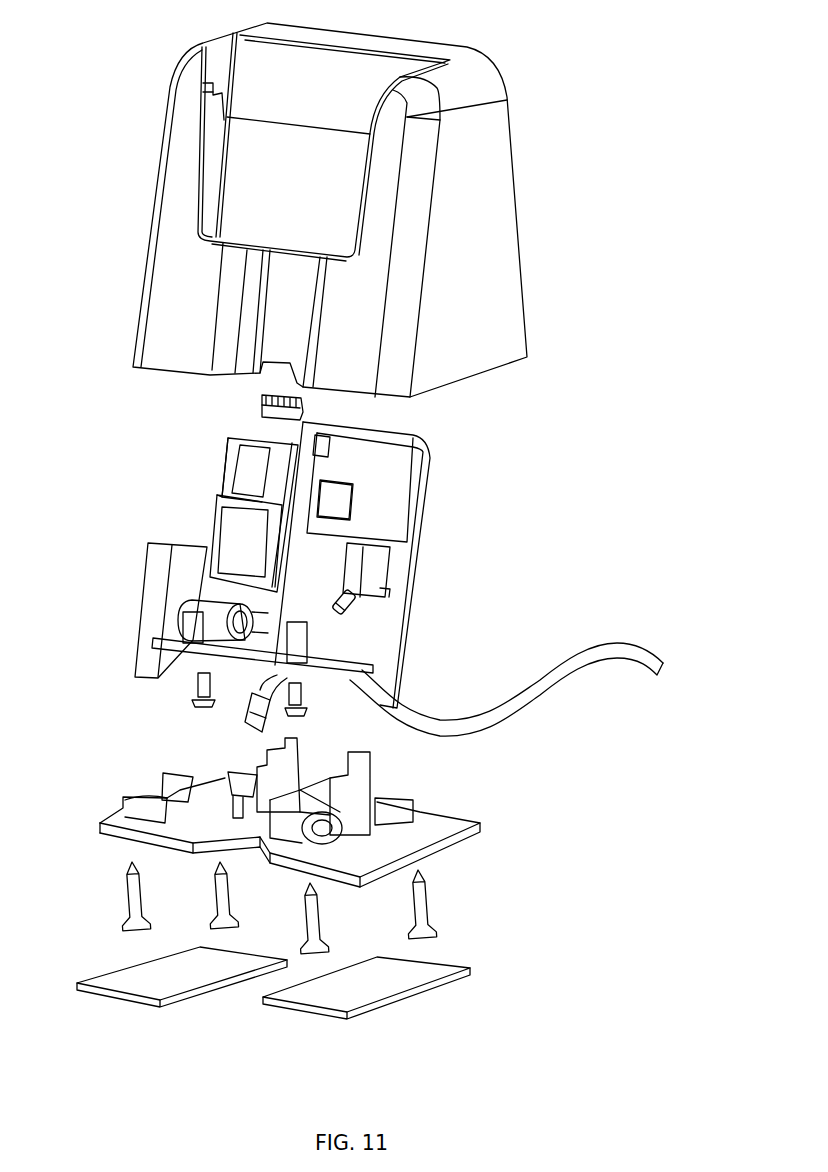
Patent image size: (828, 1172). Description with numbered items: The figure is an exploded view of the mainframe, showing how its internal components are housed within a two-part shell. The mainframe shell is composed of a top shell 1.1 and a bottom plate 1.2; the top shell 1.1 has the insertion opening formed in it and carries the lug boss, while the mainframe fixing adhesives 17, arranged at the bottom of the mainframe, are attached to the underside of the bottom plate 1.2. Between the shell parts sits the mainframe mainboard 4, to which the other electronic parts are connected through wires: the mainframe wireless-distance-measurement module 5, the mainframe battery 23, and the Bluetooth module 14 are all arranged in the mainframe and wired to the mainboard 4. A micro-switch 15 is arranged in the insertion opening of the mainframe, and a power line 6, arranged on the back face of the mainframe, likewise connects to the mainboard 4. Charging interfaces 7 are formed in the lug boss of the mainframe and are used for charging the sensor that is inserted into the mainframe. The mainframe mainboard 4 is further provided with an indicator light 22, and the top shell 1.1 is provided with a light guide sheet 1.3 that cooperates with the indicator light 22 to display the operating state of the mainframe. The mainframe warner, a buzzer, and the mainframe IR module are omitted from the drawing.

The top shell 1.1 is at (483, 250).
The bottom plate 1.2 is at (450, 843).
The light guide sheet 1.3 is at (260, 407).
The mainframe mainboard 4 is at (407, 643).
The mainframe wireless-distance-measurement module 5 is at (237, 523).
The power line 6 is at (513, 710).
The charging interfaces 7 is at (190, 630).
The Bluetooth module 14 is at (393, 495).
The micro-switch 15 is at (377, 567).
The mainframe fixing adhesives 17 is at (423, 987).
The indicator light 22 is at (243, 720).
The mainframe battery 23 is at (158, 598).